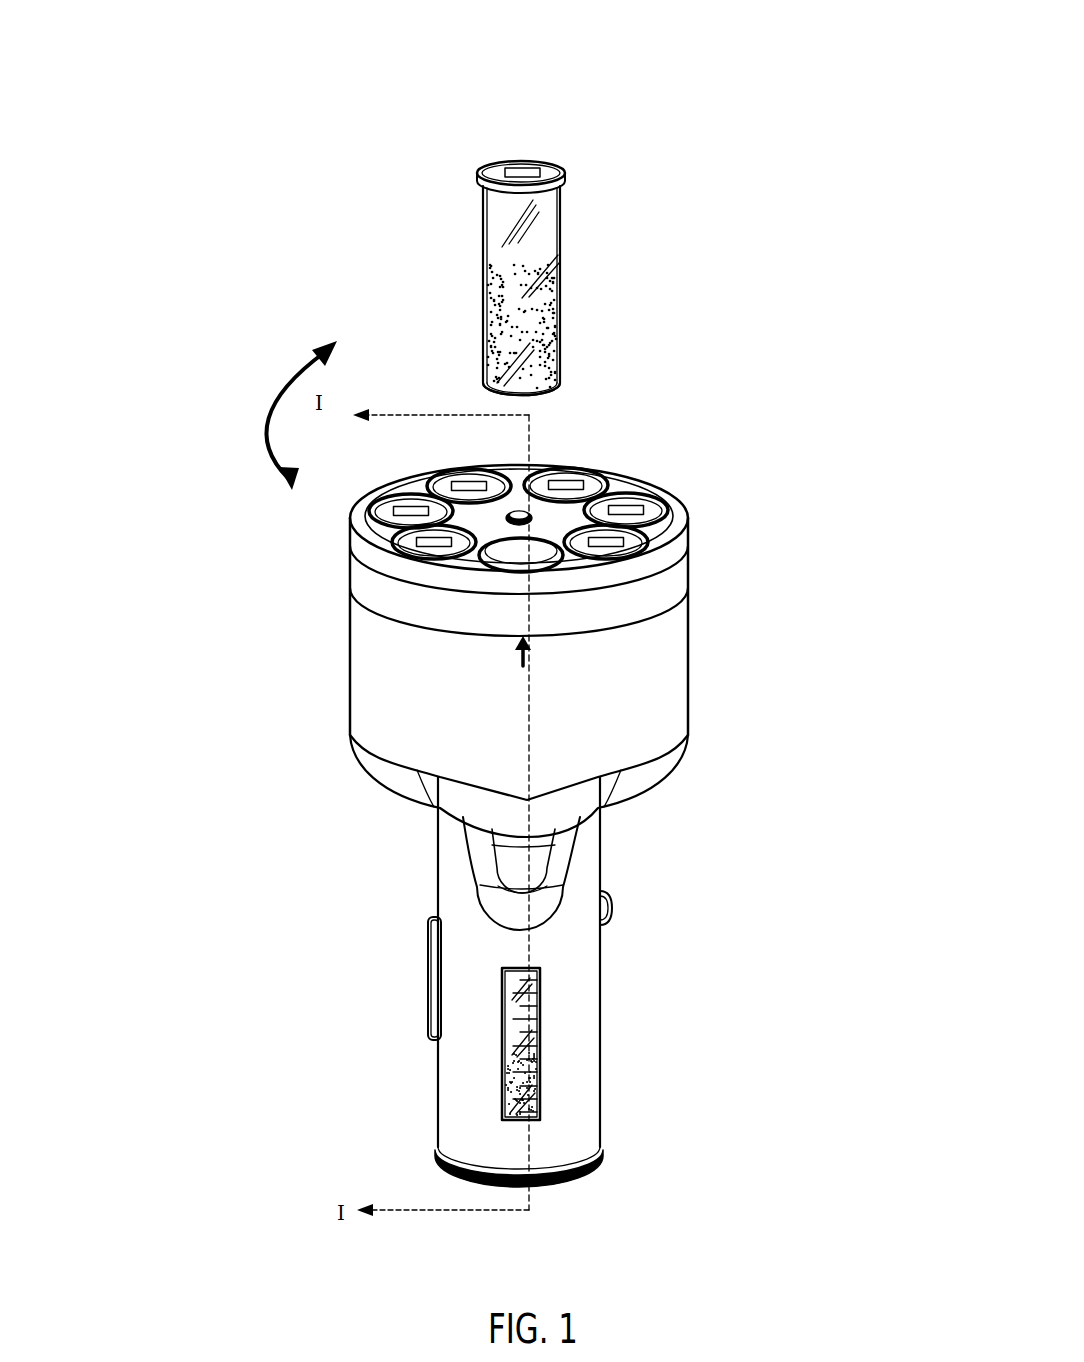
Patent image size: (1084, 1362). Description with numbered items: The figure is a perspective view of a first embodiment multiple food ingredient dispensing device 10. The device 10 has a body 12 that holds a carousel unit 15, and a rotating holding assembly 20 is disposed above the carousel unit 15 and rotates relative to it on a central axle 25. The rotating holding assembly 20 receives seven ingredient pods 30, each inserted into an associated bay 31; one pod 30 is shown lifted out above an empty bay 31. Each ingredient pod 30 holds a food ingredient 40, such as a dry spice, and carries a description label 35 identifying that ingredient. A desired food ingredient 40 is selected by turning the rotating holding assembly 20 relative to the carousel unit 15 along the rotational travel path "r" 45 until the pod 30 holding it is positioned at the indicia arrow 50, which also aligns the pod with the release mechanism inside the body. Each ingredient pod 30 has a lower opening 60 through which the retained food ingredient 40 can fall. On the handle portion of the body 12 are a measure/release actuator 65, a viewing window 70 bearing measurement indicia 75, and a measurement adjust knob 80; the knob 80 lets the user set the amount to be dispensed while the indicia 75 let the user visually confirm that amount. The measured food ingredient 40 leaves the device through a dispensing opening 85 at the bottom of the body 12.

The multiple food ingredient dispensing device 10 is at (145, 178).
The body 12 is at (697, 723).
The carousel unit 15 is at (688, 635).
The rotating holding assembly 20 is at (689, 567).
The central axle 25 is at (537, 518).
The ingredient pod 30 is at (512, 223).
The bay 31 is at (513, 558).
The description label 35 is at (528, 167).
The food ingredient 40 is at (562, 278).
The rotational travel path "r" 45 is at (272, 418).
The indicia arrow 50 is at (518, 654).
The lower opening 60 is at (545, 393).
The measure/release actuator 65 is at (430, 930).
The viewing window 70 is at (502, 1018).
The measurement indicia 75 is at (553, 1008).
The measurement adjust knob 80 is at (612, 897).
The dispensing opening 85 is at (437, 1157).